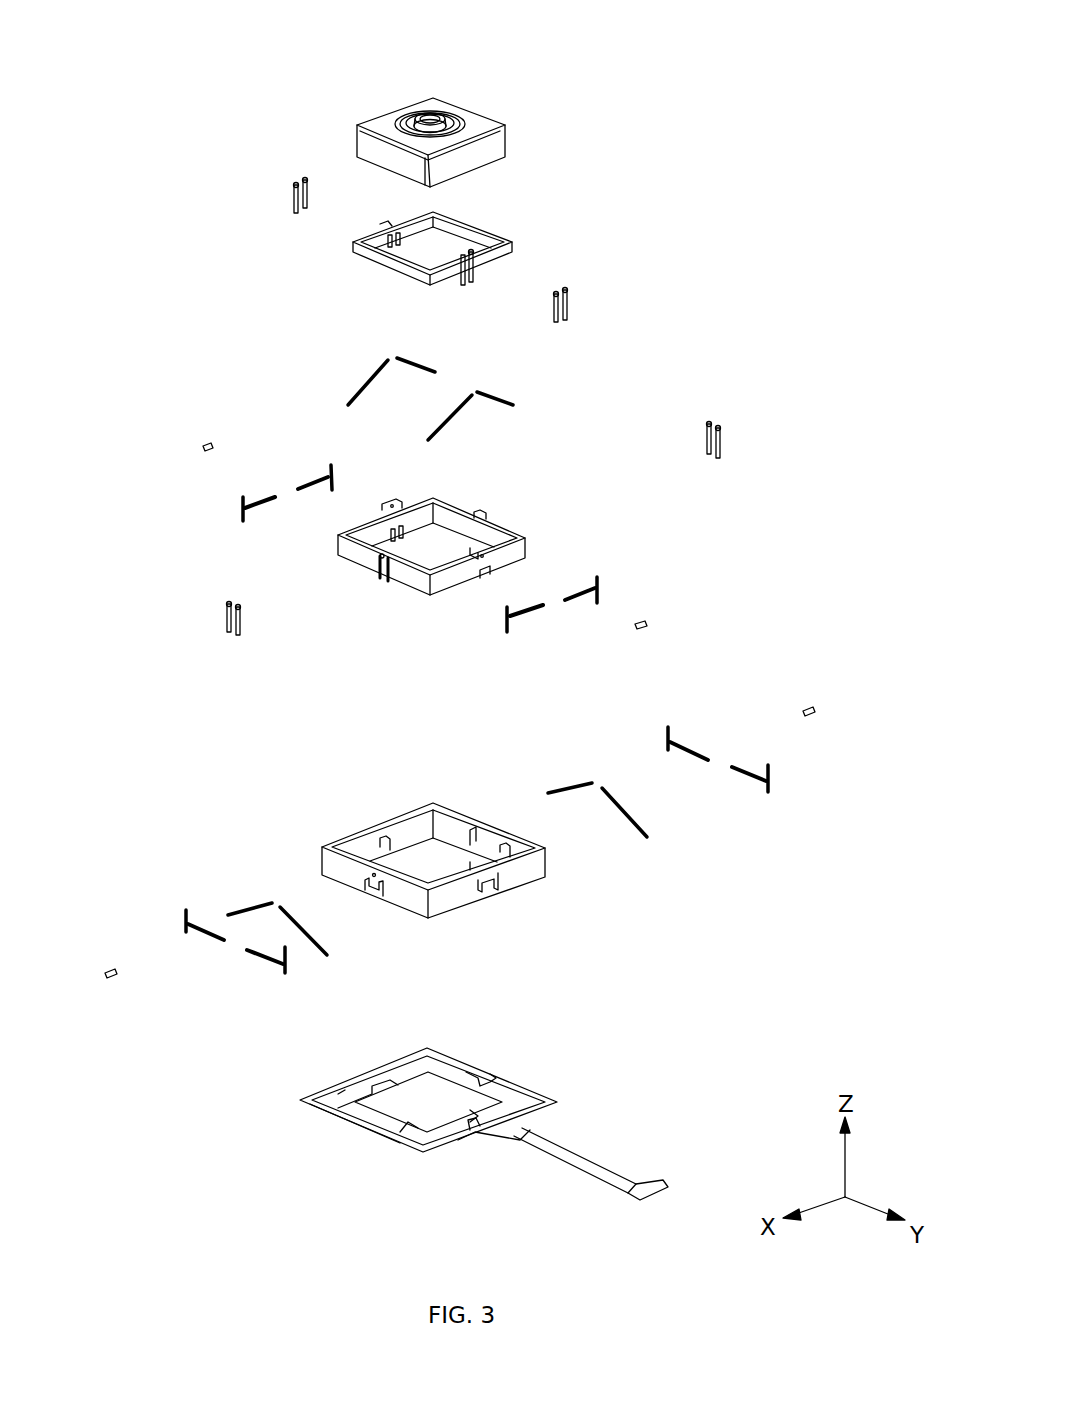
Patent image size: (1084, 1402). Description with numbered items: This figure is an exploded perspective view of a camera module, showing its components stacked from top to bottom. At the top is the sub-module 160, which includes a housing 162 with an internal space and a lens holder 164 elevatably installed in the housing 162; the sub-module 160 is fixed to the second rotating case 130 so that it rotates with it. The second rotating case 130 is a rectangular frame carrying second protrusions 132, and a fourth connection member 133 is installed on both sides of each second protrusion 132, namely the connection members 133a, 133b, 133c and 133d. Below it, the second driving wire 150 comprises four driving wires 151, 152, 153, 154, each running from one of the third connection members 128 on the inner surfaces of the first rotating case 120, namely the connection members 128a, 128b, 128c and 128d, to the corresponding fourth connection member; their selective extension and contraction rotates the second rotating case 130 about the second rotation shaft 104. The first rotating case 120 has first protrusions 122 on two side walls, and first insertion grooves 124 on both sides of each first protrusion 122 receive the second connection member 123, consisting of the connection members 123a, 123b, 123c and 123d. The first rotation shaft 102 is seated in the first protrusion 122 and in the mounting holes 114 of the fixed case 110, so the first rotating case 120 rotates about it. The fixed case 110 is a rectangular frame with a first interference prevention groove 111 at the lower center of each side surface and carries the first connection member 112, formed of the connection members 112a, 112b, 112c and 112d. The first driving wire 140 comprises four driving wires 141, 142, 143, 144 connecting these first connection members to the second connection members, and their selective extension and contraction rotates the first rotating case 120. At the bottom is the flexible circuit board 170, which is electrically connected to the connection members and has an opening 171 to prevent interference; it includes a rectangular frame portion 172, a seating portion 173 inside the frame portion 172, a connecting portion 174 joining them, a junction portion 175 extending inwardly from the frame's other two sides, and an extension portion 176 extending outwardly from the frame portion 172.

The sub-module 160 is at (465, 99).
The housing 162 is at (487, 123).
The lens holder 164 is at (440, 113).
The second rotating case 130 is at (468, 233).
The second protrusions 132 is at (478, 262).
The fourth connection member 133 is at (441, 217).
The 4-1 connection member 133a is at (573, 300).
The 4-2 connection member 133b is at (573, 290).
The 4-3 connection member 133c is at (305, 180).
The 4-4 connection member 133d is at (293, 187).
The second driving wire 150 is at (458, 380).
The 2-1 driving wire 151 is at (450, 420).
The 2-2 driving wire 152 is at (513, 405).
The 2-3 driving wire 153 is at (398, 358).
The 2-4 driving wire 154 is at (358, 390).
The second rotation shaft 104 is at (207, 442).
The third connection member 128 is at (422, 547).
The 3-1 connection member 128a is at (530, 620).
The 3-2 connection member 128b is at (602, 580).
The 3-3 connection member 128c is at (310, 478).
The 3-4 connection member 128d is at (240, 507).
The first rotating case 120 is at (390, 575).
The first protrusions 122 is at (380, 560).
The first insertion grooves 124 is at (383, 580).
The second connection member 123 is at (469, 535).
The 2-1 connection member 123a is at (227, 617).
The 2-2 connection member 123b is at (240, 633).
The 2-3 connection member 123c is at (713, 423).
The 2-4 connection member 123d is at (720, 437).
The first rotation shaft 102 is at (812, 707).
The first connection member 112 is at (536, 917).
The 1-1 connection member 112a is at (207, 937).
The 1-2 connection member 112b is at (265, 957).
The 1-3 connection member 112c is at (713, 752).
The 1-4 connection member 112d is at (773, 783).
The first driving wire 140 is at (464, 869).
The 1-1 driving wire 141 is at (230, 910).
The 1-2 driving wire 142 is at (283, 907).
The 1-3 driving wire 143 is at (602, 783).
The 1-4 driving wire 144 is at (633, 823).
The fixed case 110 is at (433, 861).
The first interference prevention groove 111 is at (376, 896).
The mounting holes 114 is at (483, 833).
The flexible circuit board 170 is at (445, 1152).
The opening 171 is at (313, 1110).
The frame portion 172 is at (413, 1145).
The seating portion 173 is at (387, 1102).
The connecting portion 174 is at (472, 1122).
The junction portion 175 is at (497, 1075).
The extension portion 176 is at (597, 1173).